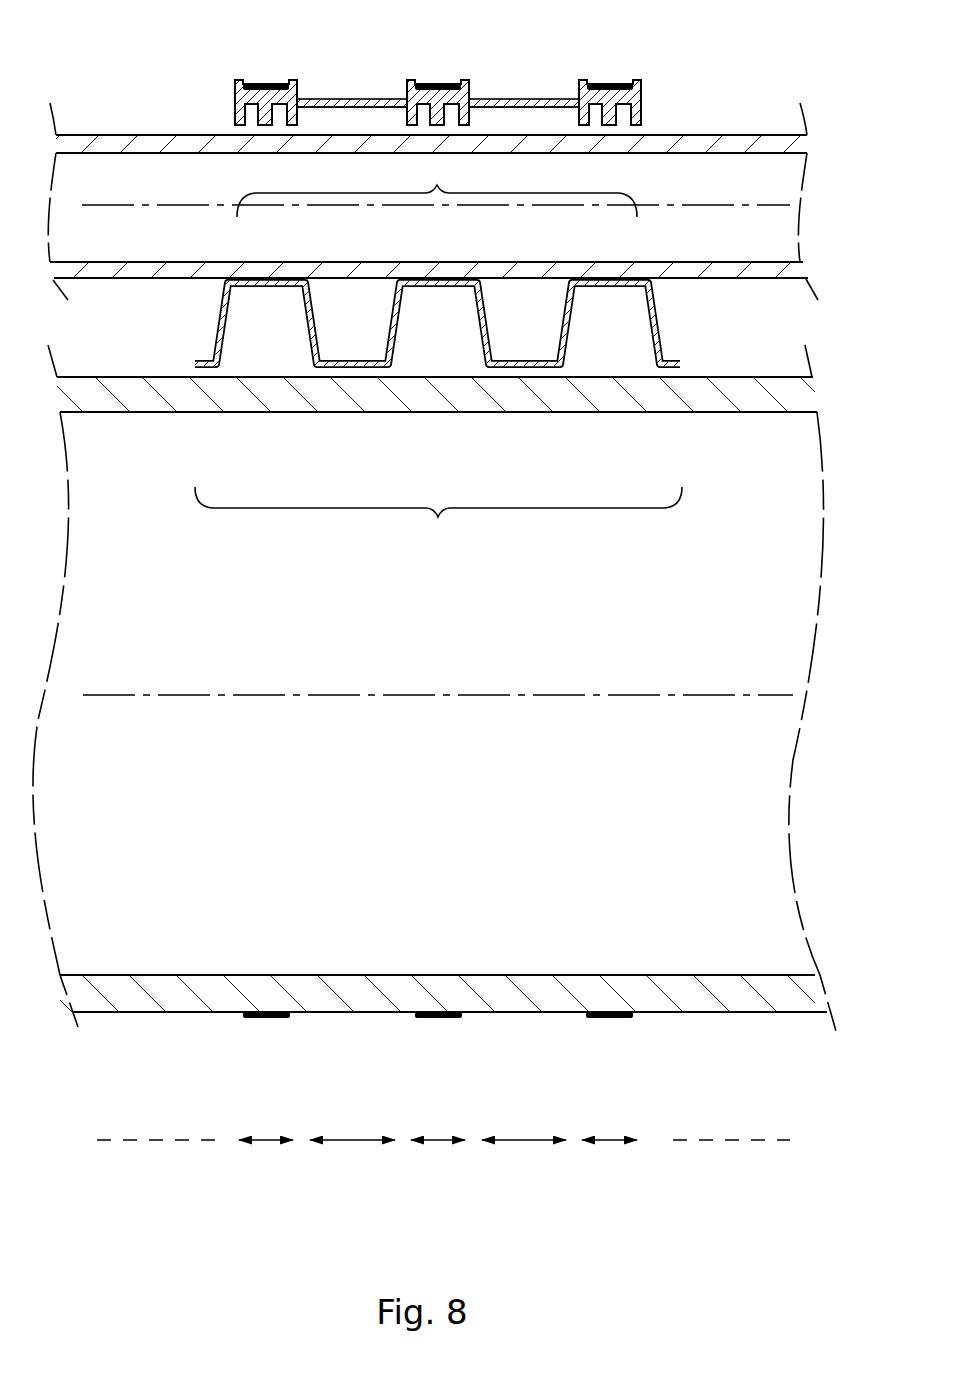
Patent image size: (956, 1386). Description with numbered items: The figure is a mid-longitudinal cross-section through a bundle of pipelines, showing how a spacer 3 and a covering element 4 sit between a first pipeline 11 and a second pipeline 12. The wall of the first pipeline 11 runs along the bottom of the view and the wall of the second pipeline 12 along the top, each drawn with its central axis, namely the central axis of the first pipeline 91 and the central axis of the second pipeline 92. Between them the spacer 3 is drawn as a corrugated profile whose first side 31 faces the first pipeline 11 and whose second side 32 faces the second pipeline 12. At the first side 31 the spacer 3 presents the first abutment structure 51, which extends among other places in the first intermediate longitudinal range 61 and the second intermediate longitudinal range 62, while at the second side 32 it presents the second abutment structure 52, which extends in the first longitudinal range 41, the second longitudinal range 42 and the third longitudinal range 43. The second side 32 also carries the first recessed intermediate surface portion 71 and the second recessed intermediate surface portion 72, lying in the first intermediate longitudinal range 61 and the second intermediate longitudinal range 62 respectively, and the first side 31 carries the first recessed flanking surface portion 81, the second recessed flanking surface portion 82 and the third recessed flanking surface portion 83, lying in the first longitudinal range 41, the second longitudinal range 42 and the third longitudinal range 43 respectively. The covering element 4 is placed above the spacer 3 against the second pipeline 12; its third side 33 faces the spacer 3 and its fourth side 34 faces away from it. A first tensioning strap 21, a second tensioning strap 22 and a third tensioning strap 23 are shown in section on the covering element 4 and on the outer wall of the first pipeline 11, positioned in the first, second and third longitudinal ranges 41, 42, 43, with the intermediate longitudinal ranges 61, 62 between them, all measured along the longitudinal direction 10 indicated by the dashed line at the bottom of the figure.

The spacer 3 is at (171, 327).
The covering element 4 is at (393, 96).
The longitudinal direction 10 is at (126, 1145).
The first pipeline 11 is at (748, 992).
The second pipeline 12 is at (730, 143).
The first tensioning strap 21 is at (267, 81).
The second tensioning strap 22 is at (439, 81).
The third tensioning strap 23 is at (611, 81).
The first side 31 is at (437, 465).
The second side 32 is at (437, 186).
The third side 33 is at (355, 114).
The fourth side 34 is at (355, 80).
The first longitudinal range 41 is at (266, 1144).
The second longitudinal range 42 is at (439, 1144).
The third longitudinal range 43 is at (610, 1144).
The first abutment structure 51 is at (207, 371).
The second abutment structure 52 is at (266, 275).
The first intermediate longitudinal range 61 is at (353, 1144).
The second intermediate longitudinal range 62 is at (525, 1144).
The first recessed intermediate surface portion 71 is at (355, 348).
The second recessed intermediate surface portion 72 is at (527, 348).
The first recessed flanking surface portion 81 is at (262, 291).
The second recessed flanking surface portion 82 is at (434, 291).
The third recessed flanking surface portion 83 is at (606, 291).
The central axis of the first pipeline 91 is at (710, 697).
The central axis of the second pipeline 92 is at (710, 207).